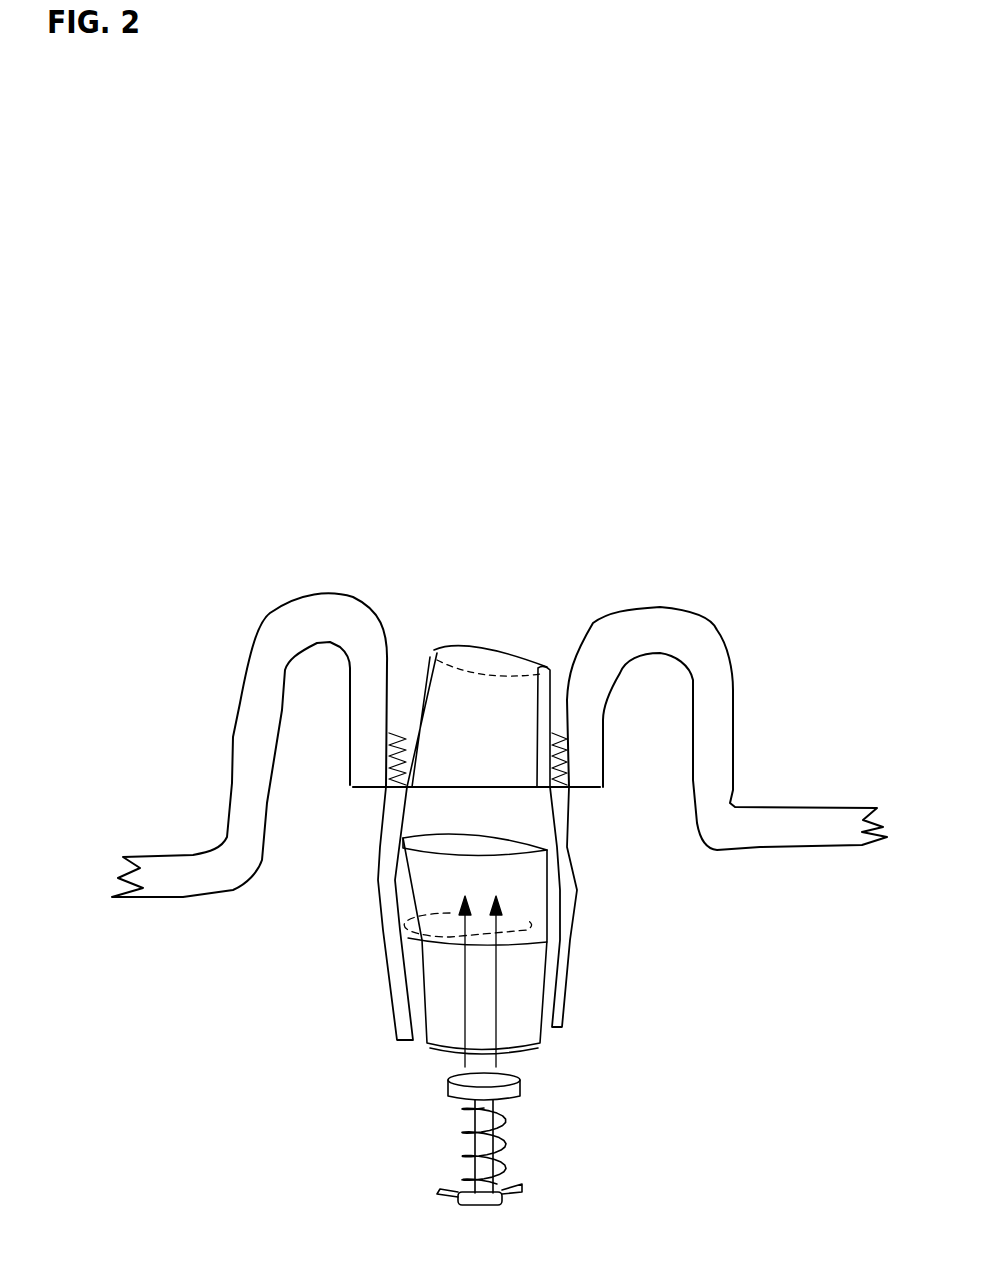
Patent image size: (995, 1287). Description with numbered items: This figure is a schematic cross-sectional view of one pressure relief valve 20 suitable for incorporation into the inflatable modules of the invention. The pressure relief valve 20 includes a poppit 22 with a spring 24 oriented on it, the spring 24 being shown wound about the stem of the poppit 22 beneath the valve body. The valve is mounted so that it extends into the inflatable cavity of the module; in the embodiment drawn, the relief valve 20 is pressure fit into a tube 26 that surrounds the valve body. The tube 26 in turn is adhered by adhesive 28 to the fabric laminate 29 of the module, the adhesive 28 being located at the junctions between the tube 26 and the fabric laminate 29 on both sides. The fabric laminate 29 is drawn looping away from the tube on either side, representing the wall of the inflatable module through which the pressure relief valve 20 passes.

The pressure relief valve 20 is at (410, 905).
The poppit 22 is at (537, 1087).
The spring 24 is at (512, 1145).
The tube 26 is at (580, 948).
The adhesive 28 is at (384, 795).
The fabric laminate 29 is at (728, 807).